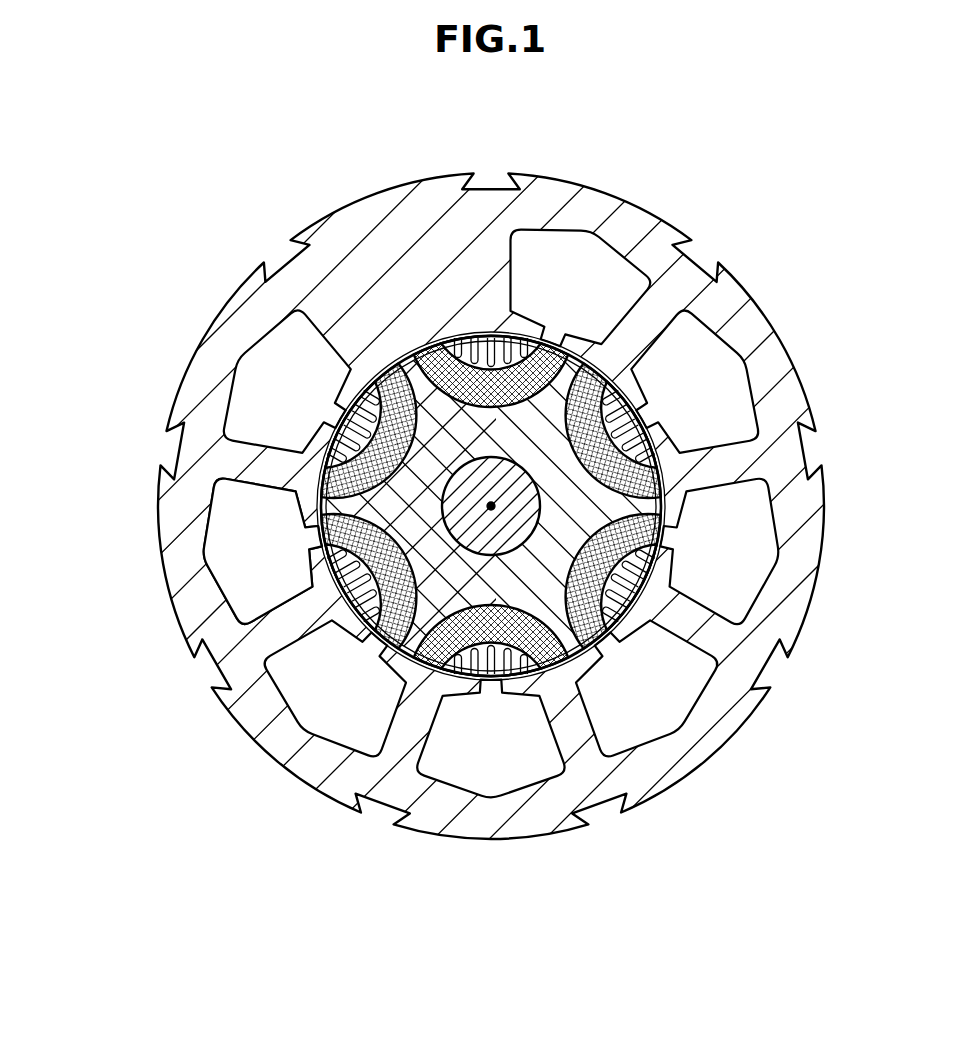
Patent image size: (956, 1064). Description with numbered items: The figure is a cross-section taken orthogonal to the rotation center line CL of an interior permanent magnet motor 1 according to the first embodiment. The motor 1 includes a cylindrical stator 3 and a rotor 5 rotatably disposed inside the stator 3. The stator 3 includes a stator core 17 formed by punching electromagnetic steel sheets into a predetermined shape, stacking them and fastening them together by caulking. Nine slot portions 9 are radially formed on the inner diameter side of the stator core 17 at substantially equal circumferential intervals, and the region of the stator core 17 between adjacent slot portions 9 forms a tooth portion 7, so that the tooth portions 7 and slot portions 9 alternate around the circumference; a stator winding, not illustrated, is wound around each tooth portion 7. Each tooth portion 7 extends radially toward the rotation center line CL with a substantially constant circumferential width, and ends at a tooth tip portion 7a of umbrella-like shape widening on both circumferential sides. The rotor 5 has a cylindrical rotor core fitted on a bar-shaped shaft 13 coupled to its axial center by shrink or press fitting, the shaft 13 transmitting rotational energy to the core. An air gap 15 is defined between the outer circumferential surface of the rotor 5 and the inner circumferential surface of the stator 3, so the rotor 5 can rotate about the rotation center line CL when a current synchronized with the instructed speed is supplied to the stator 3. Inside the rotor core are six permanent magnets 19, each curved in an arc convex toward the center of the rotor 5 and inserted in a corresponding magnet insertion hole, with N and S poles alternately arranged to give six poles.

The interior permanent magnet motor 1 is at (112, 139).
The stator 3 is at (182, 318).
The rotor 5 is at (336, 412).
The tooth portion 7 is at (237, 457).
The tooth tip portion 7a is at (410, 345).
The slot portion 9 is at (178, 603).
The shaft 13 is at (510, 530).
The air gap 15 is at (624, 372).
The stator core 17 is at (625, 215).
The permanent magnet 19 is at (600, 632).
The rotation center line CL is at (490, 507).